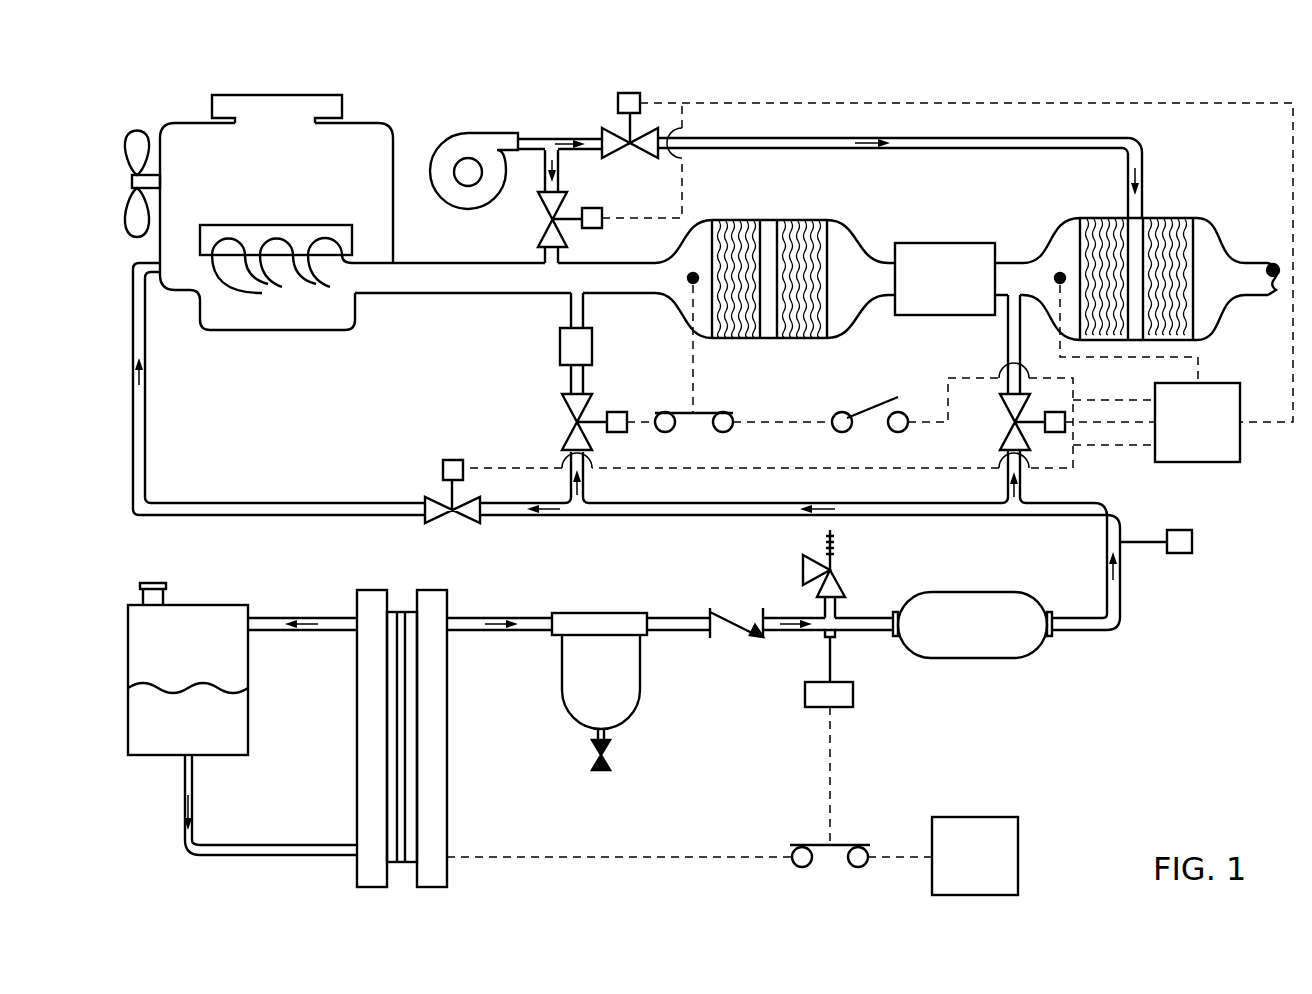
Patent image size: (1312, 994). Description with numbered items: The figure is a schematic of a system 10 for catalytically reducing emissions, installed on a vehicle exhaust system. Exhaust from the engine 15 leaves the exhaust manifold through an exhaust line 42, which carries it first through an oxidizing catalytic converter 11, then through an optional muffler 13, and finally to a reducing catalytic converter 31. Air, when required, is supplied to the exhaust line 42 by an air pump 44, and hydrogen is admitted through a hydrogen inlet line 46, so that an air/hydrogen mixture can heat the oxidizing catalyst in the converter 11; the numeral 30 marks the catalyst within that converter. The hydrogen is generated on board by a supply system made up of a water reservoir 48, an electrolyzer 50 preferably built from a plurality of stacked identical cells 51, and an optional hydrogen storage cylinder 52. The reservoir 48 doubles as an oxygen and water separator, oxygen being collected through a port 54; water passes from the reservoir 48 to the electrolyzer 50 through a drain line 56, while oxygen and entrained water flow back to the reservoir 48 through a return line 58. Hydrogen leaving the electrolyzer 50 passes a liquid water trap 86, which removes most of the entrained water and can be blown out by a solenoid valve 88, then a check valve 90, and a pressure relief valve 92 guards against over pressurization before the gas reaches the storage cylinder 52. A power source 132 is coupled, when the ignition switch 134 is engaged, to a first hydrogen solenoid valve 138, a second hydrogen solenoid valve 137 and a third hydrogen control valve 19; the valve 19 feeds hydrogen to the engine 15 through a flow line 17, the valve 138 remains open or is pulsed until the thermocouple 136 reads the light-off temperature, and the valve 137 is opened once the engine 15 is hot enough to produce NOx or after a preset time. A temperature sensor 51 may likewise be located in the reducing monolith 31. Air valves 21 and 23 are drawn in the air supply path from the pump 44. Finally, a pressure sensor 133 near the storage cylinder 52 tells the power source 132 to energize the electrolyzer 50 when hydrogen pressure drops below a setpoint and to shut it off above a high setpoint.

The system 10 is at (1197, 741).
The oxidizing catalytic converter 11 is at (855, 320).
The muffler 13 is at (930, 243).
The engine 15 is at (305, 331).
The flow line 17 is at (146, 445).
The third hydrogen control valve 19 is at (433, 500).
The secondary air valve 21 is at (548, 221).
The secondary air valve 23 is at (632, 150).
The catalyst substrate 30 is at (800, 220).
The reducing catalytic converter 31 is at (1170, 218).
The exhaust line 42 is at (477, 297).
The air pump 44 is at (484, 133).
The hydrogen inlet line 46 is at (571, 310).
The water reservoir 48 is at (248, 655).
The electrolyzer 50 is at (357, 768).
The stacked identical cells 51 is at (1198, 367).
The hydrogen storage cylinder 52 is at (962, 592).
The port 54 is at (166, 588).
The drain line 56 is at (183, 785).
The return line 58 is at (272, 612).
The liquid water trap 86 is at (562, 672).
The solenoid valve 88 is at (592, 752).
The check valve 90 is at (712, 605).
The pressure relief valve 92 is at (838, 575).
The power source 132 is at (1185, 462).
The pressure sensor 133 is at (805, 690).
The ignition switch 134 is at (875, 408).
The thermocouple 136 is at (695, 405).
The second hydrogen solenoid valve 137 is at (1007, 430).
The first hydrogen solenoid valve 138 is at (572, 420).